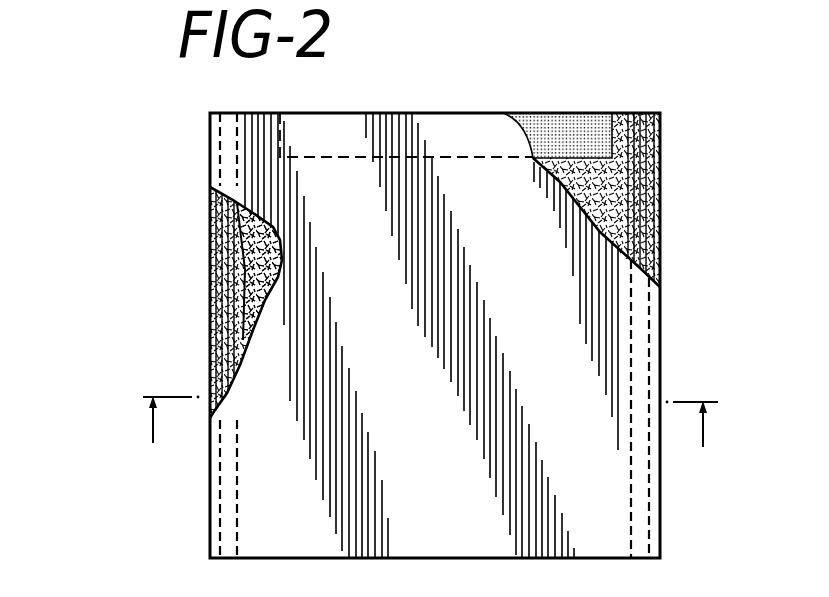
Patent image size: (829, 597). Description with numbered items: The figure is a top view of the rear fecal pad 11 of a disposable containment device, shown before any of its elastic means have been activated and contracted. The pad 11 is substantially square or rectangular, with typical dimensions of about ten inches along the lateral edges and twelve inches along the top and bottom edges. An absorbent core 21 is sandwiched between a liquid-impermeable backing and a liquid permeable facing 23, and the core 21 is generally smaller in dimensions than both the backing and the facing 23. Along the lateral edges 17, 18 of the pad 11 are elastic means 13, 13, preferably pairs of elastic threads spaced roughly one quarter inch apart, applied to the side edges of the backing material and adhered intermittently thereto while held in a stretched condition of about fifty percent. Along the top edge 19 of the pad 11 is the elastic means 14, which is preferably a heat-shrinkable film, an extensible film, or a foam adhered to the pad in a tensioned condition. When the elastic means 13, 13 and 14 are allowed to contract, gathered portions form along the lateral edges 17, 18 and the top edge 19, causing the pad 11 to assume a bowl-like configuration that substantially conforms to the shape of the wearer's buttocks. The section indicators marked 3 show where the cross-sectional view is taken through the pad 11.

The rear fecal pad 11 is at (133, 135).
The elastic means 13 is at (237, 265).
The elastic means 14 is at (568, 143).
The lateral edge 17 is at (210, 322).
The lateral edge 18 is at (662, 317).
The top edge 19 is at (379, 113).
The absorbent core 21 is at (612, 188).
The liquid permeable facing 23 is at (587, 518).
The section line 3- 3 is at (430, 439).